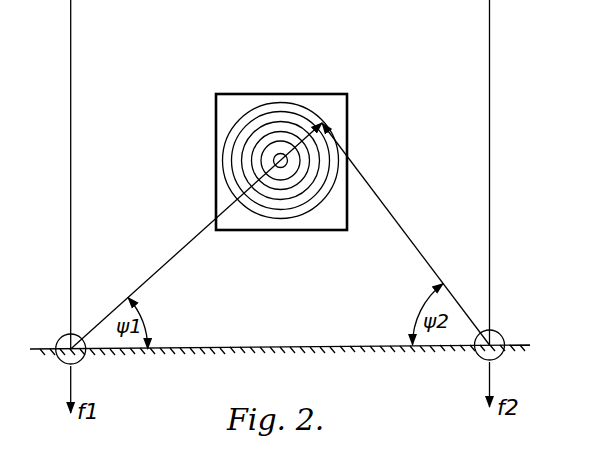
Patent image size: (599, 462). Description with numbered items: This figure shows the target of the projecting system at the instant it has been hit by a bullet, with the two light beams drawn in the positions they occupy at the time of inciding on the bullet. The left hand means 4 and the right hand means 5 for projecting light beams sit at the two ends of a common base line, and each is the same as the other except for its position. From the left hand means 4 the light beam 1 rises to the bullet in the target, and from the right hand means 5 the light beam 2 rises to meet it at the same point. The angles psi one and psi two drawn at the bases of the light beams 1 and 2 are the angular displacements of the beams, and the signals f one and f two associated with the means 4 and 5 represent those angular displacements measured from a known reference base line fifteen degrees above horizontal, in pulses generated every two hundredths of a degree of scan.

The light beam 1 is at (168, 262).
The light beam 2 is at (411, 244).
The left hand means for projecting light beam 4 is at (60, 340).
The right hand means for projecting light beam 5 is at (499, 333).